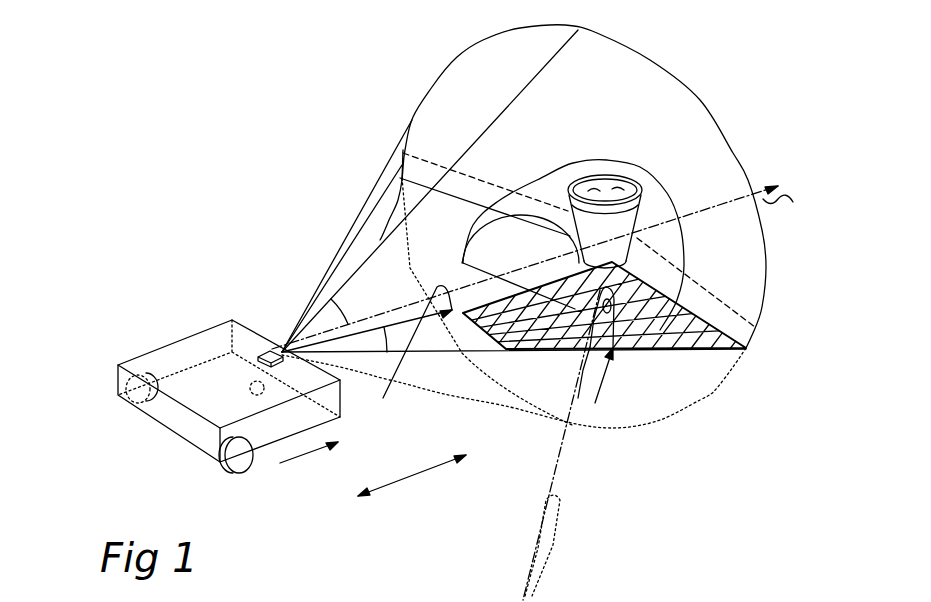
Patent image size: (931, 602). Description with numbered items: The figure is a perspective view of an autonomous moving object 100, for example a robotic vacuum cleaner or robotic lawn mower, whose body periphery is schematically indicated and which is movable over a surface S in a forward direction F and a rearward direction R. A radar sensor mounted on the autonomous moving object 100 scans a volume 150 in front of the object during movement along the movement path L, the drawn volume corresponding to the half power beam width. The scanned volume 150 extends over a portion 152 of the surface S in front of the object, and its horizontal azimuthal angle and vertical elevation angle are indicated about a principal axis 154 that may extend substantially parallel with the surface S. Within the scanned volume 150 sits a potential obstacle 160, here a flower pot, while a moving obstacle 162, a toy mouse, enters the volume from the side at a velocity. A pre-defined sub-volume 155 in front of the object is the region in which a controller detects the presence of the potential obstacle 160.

The autonomous moving object 100 is at (679, 444).
The scanned volume 150 is at (383, 115).
The portion of the surface 152 is at (498, 353).
The principal axis 154 is at (368, 253).
The pre-defined sub-volume 155 is at (575, 157).
The potential obstacle 160 is at (636, 219).
The moving obstacle 162 is at (657, 355).